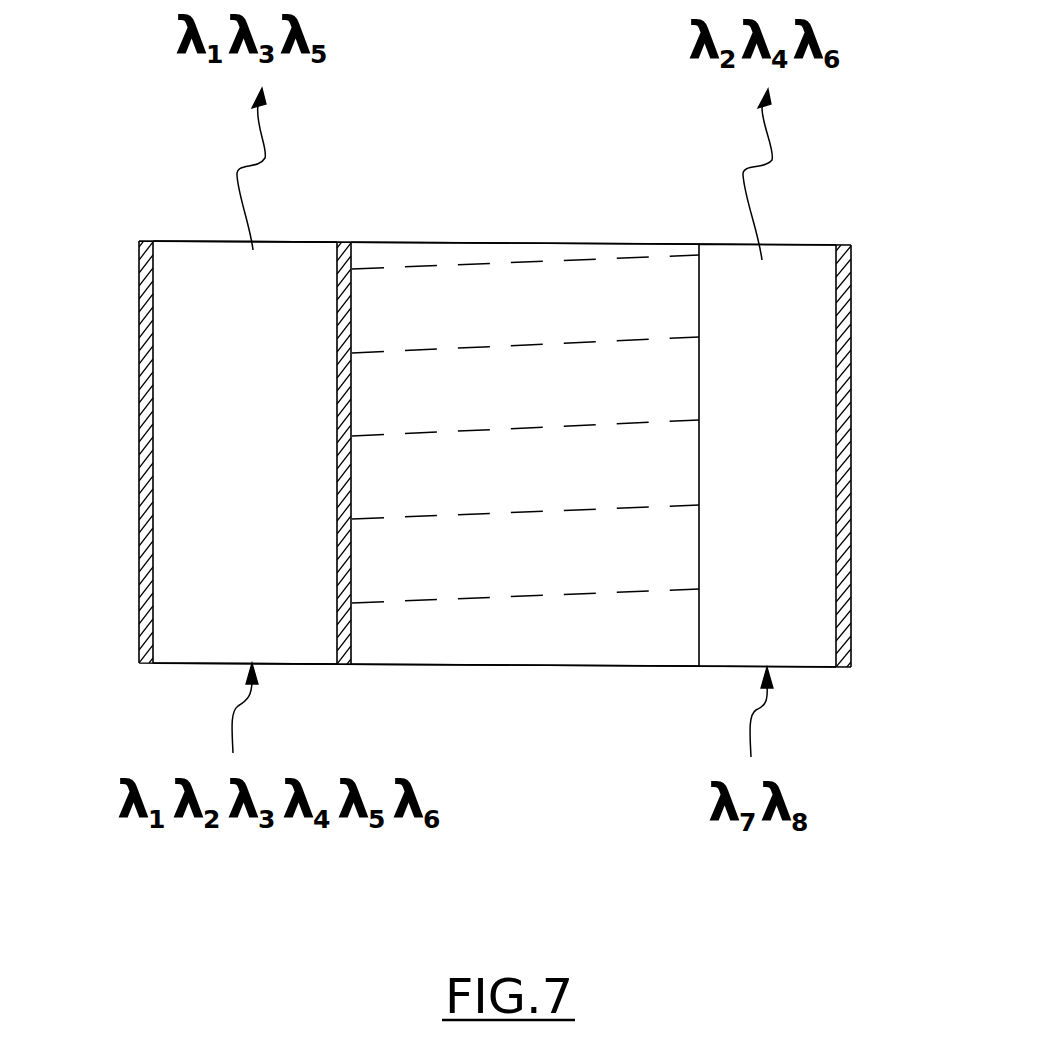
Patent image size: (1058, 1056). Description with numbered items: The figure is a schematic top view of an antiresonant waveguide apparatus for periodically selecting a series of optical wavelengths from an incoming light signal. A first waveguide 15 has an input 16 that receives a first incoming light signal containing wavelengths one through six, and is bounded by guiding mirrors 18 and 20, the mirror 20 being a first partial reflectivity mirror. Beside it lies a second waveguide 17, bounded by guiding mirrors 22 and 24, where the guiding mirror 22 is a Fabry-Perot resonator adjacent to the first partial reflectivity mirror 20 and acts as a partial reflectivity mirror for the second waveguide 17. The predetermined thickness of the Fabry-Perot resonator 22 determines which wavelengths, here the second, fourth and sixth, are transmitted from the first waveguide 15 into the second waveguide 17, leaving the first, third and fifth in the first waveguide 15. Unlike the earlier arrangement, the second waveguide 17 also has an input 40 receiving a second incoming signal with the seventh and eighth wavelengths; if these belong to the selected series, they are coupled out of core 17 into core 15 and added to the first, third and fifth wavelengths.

The first waveguide 15 is at (259, 407).
The input 16 is at (188, 650).
The second waveguide 17 is at (777, 412).
The guiding mirror 18 is at (148, 243).
The first partial reflectivity mirror 20 is at (368, 250).
The Fabry-Perot resonator 22 is at (508, 275).
The guiding mirror 24 is at (850, 258).
The input 40 is at (782, 650).